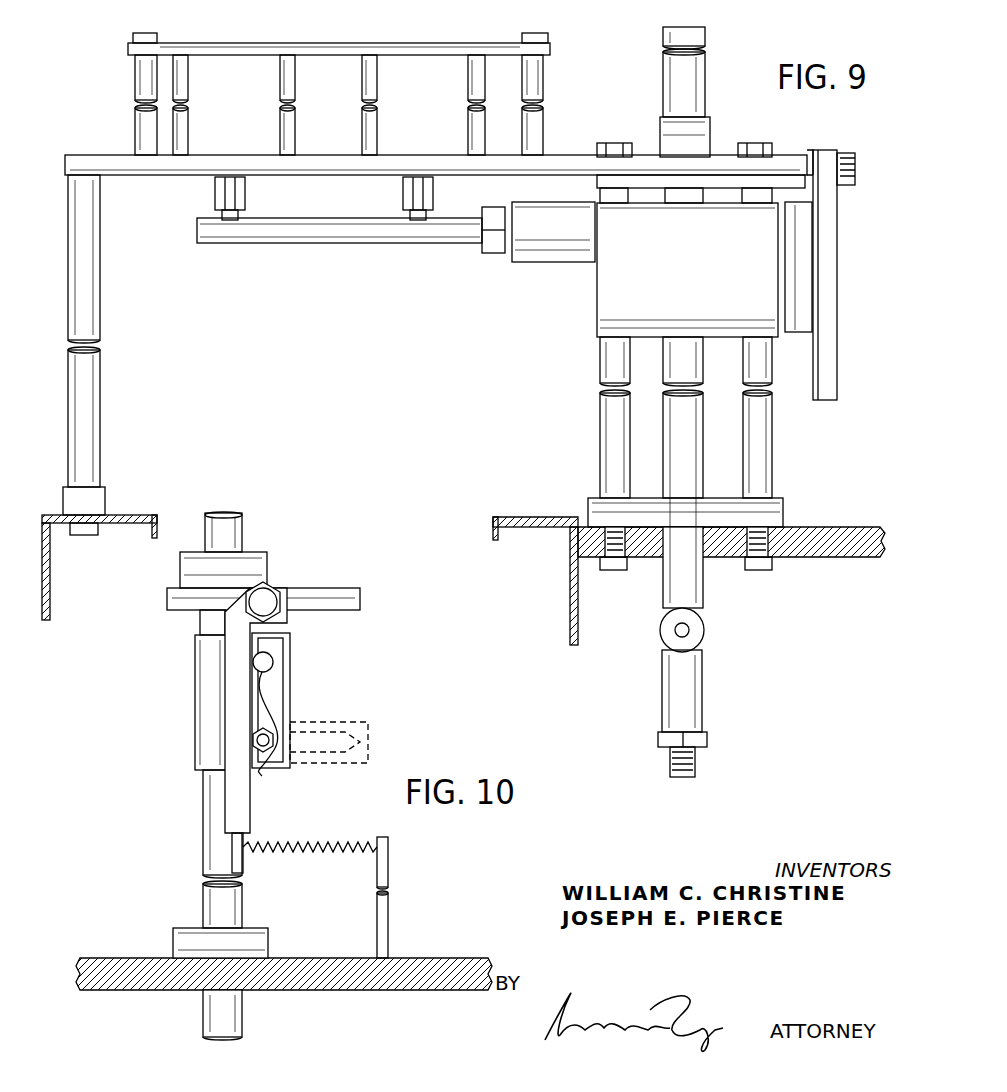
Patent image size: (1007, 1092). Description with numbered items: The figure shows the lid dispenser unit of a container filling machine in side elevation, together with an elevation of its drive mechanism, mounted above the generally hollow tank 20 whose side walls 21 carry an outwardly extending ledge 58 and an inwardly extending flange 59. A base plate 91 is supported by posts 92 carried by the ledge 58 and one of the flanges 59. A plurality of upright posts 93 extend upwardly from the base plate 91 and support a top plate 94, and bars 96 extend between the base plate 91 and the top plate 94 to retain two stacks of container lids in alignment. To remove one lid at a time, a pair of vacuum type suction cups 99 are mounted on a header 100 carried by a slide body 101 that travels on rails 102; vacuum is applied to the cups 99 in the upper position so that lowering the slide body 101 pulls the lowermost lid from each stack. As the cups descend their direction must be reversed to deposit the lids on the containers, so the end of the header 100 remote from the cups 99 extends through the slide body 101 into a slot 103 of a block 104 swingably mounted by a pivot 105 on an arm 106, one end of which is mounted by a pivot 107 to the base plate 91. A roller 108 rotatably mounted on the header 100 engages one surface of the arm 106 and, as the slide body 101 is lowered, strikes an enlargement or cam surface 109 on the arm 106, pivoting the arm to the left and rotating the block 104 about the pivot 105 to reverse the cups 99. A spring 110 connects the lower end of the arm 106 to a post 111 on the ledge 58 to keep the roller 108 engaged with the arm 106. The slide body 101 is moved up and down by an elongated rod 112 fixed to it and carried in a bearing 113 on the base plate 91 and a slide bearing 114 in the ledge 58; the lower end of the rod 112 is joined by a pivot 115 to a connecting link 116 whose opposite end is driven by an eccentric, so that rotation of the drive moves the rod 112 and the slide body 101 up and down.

In FIG. 9, the tank 20 is at (529, 500).
In FIG. 9, the side walls 21 is at (50, 597).
In FIG. 9, the ledge 58 is at (852, 534).
In FIG. 10, the ledge 58 is at (318, 982).
In FIG. 9, the flange 59 is at (138, 515).
In FIG. 9, the base plate 91 is at (148, 168).
In FIG. 10, the base plate 91 is at (334, 598).
In FIG. 9, the posts 92 is at (68, 289).
In FIG. 9, the upright posts 93 is at (143, 87).
In FIG. 9, the top plate 94 is at (333, 47).
In FIG. 9, the bars 96 is at (185, 118).
In FIG. 9, the suction cups 99 is at (218, 178).
In FIG. 9, the header 100 is at (340, 236).
In FIG. 9, the slide body 101 is at (613, 288).
In FIG. 10, the slide body 101 is at (207, 675).
In FIG. 9, the rails 102 is at (610, 412).
In FIG. 10, the slot 103 is at (268, 688).
In FIG. 9, the block 104 is at (800, 279).
In FIG. 10, the block 104 is at (280, 644).
In FIG. 10, the pivot 105 is at (268, 760).
In FIG. 9, the arm 106 is at (826, 349).
In FIG. 10, the arm 106 is at (235, 714).
In FIG. 9, the pivot 107 is at (855, 171).
In FIG. 10, the pivot 107 is at (267, 591).
In FIG. 10, the roller 108 is at (270, 669).
In FIG. 10, the cam surface 109 is at (258, 727).
In FIG. 10, the spring 110 is at (312, 845).
In FIG. 10, the post 111 is at (389, 872).
In FIG. 9, the elongated rod 112 is at (690, 412).
In FIG. 10, the elongated rod 112 is at (223, 518).
In FIG. 9, the bearing 113 is at (699, 135).
In FIG. 10, the bearing 113 is at (255, 552).
In FIG. 9, the slide bearing 114 is at (655, 556).
In FIG. 9, the pivot 115 is at (690, 630).
In FIG. 9, the connecting link 116 is at (690, 701).